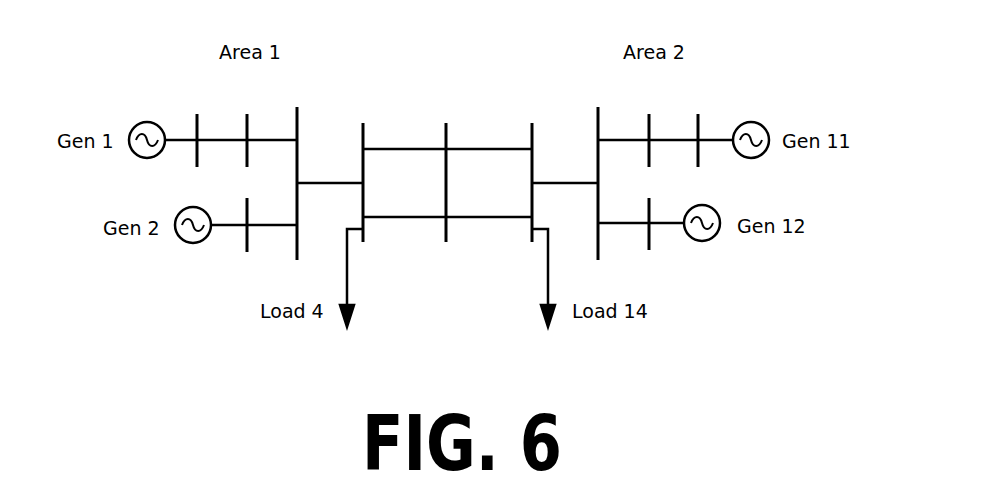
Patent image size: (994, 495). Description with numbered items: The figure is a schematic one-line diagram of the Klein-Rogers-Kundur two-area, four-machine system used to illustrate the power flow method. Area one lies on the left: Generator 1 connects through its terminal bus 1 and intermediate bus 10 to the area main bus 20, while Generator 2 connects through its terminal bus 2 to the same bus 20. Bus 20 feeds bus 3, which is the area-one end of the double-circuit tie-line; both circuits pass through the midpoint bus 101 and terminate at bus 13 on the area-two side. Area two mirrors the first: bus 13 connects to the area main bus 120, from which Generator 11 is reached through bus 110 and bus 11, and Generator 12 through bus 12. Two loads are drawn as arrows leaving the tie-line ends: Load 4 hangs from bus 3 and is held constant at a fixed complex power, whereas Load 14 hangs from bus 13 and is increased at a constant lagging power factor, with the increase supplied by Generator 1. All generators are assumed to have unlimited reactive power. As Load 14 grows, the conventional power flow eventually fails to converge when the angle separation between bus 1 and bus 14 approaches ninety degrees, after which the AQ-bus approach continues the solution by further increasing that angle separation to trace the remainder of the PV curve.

The bus 1 is at (197, 124).
The bus 10 is at (247, 124).
The bus 20 is at (297, 171).
The bus 2 is at (247, 239).
The bus 3 is at (363, 171).
The bus 101 is at (447, 165).
The bus 13 is at (532, 171).
The Load 4 is at (330, 276).
The Load 14 is at (565, 276).
The bus 120 is at (597, 171).
The bus 110 is at (648, 124).
The bus 11 is at (698, 124).
The bus 12 is at (649, 238).